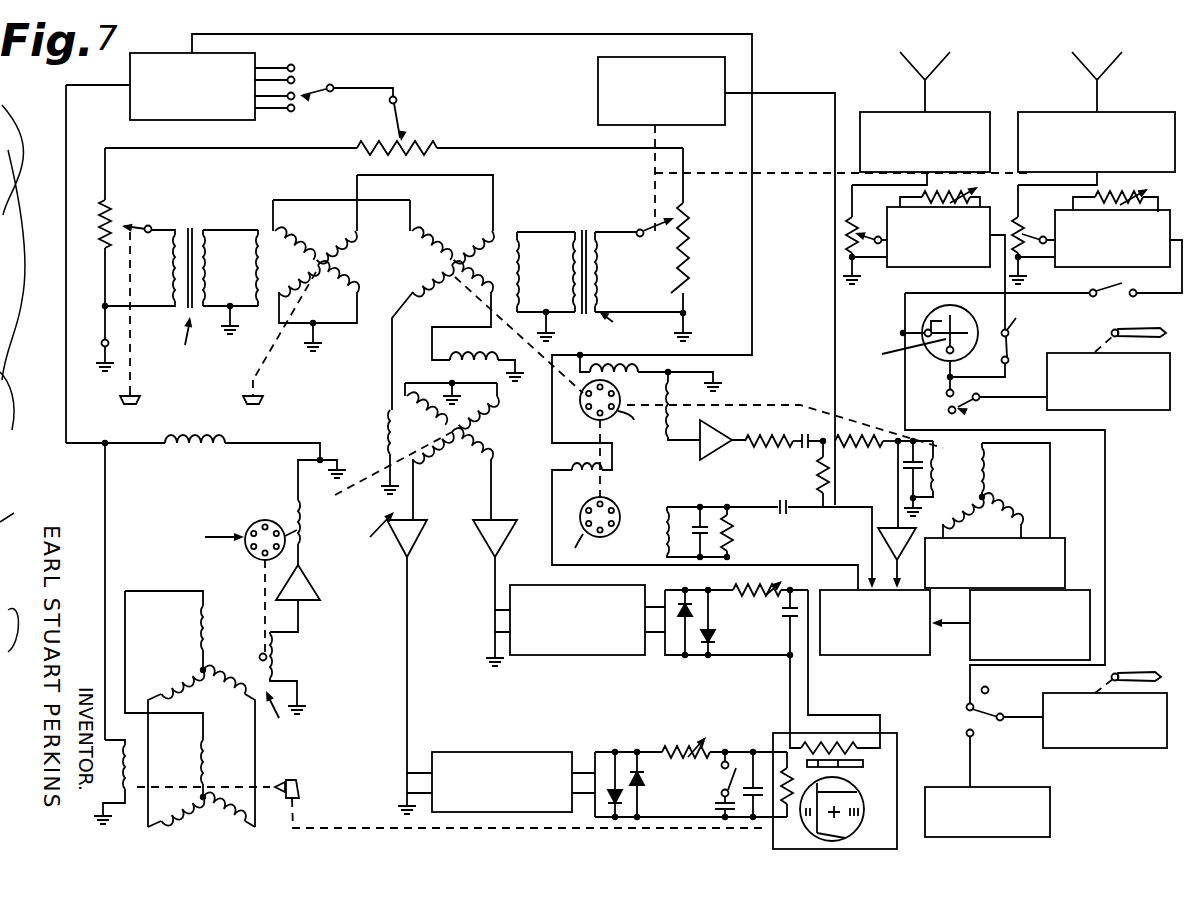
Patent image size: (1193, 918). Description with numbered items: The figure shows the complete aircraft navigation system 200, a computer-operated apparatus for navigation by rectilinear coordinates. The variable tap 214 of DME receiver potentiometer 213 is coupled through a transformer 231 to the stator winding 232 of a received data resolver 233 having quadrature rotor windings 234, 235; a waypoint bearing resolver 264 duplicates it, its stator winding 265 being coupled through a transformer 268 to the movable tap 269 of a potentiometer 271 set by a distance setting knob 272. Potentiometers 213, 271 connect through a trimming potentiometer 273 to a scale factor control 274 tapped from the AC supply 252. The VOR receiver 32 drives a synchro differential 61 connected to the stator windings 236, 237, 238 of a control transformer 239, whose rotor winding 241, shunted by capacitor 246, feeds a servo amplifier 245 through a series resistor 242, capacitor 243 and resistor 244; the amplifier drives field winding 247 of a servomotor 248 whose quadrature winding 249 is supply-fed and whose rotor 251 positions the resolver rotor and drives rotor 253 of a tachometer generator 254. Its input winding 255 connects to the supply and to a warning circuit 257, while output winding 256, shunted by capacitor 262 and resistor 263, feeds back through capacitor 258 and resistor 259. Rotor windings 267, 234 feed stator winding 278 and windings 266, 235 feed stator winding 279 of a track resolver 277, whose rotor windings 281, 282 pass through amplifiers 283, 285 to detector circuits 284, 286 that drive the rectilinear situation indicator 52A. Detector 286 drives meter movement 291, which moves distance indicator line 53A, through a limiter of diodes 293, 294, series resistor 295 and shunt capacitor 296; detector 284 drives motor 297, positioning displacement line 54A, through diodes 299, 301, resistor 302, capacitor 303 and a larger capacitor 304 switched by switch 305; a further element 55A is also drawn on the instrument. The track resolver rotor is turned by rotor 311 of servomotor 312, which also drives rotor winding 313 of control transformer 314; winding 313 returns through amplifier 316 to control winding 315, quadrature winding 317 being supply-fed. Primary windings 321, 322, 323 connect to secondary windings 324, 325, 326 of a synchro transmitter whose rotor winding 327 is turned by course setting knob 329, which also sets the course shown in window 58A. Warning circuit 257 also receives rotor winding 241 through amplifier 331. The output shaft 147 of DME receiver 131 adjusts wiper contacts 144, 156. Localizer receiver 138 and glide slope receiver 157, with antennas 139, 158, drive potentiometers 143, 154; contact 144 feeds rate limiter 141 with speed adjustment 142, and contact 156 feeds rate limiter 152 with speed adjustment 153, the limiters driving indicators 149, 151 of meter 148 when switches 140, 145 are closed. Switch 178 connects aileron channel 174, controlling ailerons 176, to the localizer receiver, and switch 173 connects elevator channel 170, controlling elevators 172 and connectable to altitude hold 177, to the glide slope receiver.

The AC power supply 252 is at (131, 113).
The scale factor control 274 is at (311, 88).
The trimming potentiometer 273 is at (418, 142).
The potentiometer 271 is at (91, 259).
The movable tap 269 is at (141, 223).
The distance setting knob 272 is at (136, 408).
The stator winding 265 is at (181, 282).
The transformer 268 is at (180, 295).
The waypoint bearing resolver 264 is at (266, 224).
The rotor winding 267 is at (345, 247).
The rotor winding 266 is at (342, 290).
The rotor winding 235 is at (428, 242).
The received data resolver 233 is at (498, 238).
The rotor winding 234 is at (418, 302).
The second quadrature stator winding 279 is at (510, 335).
The first stator winding 278 is at (385, 430).
The stator winding 232 is at (517, 284).
The transformer 231 is at (643, 324).
The variable tap 214 is at (645, 242).
The DME receiver potentiometer 213 is at (688, 259).
The DME receiver 131 is at (598, 90).
The navigation system 200 is at (767, 350).
The output shaft 147 is at (786, 178).
The quadrature stator winding 249 is at (610, 370).
The servomotor 248 is at (730, 335).
The first field winding 247 is at (676, 430).
The servo amplifier 245 is at (702, 454).
The rotor 251 is at (611, 411).
The tachometer generator 254 is at (611, 492).
The rotor 253 is at (596, 532).
The input stator winding 255 is at (566, 470).
The output stator winding 256 is at (660, 525).
The capacitor 262 is at (707, 498).
The resistor 263 is at (734, 540).
The series capacitor 258 is at (770, 511).
The series resistor 244 is at (772, 430).
The capacitor 243 is at (778, 450).
The series resistor 259 is at (818, 478).
The series resistor 242 is at (850, 446).
The capacitor 246 is at (910, 472).
The amplifier 331 is at (888, 515).
The rotor winding 241 is at (938, 476).
The control transformer 239 is at (968, 448).
The stator winding 236 is at (990, 470).
The stator winding 237 is at (1013, 504).
The stator winding 238 is at (969, 518).
The synchro differential 61 is at (1059, 550).
The warning circuit 257 is at (863, 658).
The VOR receiver 32 is at (976, 652).
The localizer receiver 138 is at (945, 118).
The antenna 139 is at (941, 68).
The glide slope receiver 157 is at (1148, 120).
The antenna 158 is at (1112, 68).
The potentiometer 143 is at (846, 236).
The speed adjustment 142 is at (955, 192).
The rate limiter 141 is at (930, 270).
The potentiometer 154 is at (1022, 215).
The speed adjustment 153 is at (1126, 194).
The rate limiter 152 is at (1108, 270).
The wiper contact 156 is at (1030, 258).
The wiper contact 144 is at (991, 492).
The switch 145 is at (1104, 305).
The meter 148 is at (956, 322).
The indicator 151 is at (900, 328).
The meter movement 149 is at (898, 352).
The switch 140 is at (1003, 341).
The switch 178 is at (966, 410).
The aileron channel 174 is at (1139, 411).
The ailerons 176 is at (1131, 331).
The switch 173 is at (1005, 729).
The elevator channel 170 is at (1130, 749).
The elevators 172 is at (1127, 671).
The altitude hold 177 is at (1030, 838).
The window 58A is at (867, 763).
The meter movement 291 is at (846, 742).
The rectilinear situation indicator 52A is at (870, 762).
The distance indicator line 53A is at (896, 772).
The linear displacement indicator line 54A is at (850, 832).
The indicator needle 55A is at (840, 818).
The detector circuit 286 is at (560, 656).
The diode 293 is at (663, 592).
The diode 294 is at (711, 640).
The series resistor 295 is at (782, 582).
The shunt capacitor 296 is at (784, 624).
The rotor winding 281 is at (482, 415).
The rotor winding 282 is at (474, 457).
The amplifier 283 is at (424, 548).
The amplifier 285 is at (502, 532).
The track resolver 277 is at (393, 493).
The detector circuit 284 is at (495, 748).
The diode 299 is at (625, 801).
The diode 301 is at (645, 778).
The series resistor 302 is at (691, 738).
The switch 305 is at (712, 774).
The second capacitor 304 is at (718, 813).
The shunt capacitor 303 is at (762, 738).
The motor 297 is at (786, 806).
The quadrature input winding 317 is at (184, 440).
The control winding 315 is at (303, 524).
The servomotor 312 is at (221, 540).
The rotor 311 is at (256, 558).
The amplifier 316 is at (308, 585).
The rotor winding 313 is at (283, 651).
The control transformer 314 is at (289, 715).
The primary winding 321 is at (196, 629).
The primary winding 322 is at (176, 680).
The primary winding 323 is at (234, 680).
The secondary winding 324 is at (209, 768).
The secondary winding 325 is at (177, 822).
The secondary winding 326 is at (231, 819).
The primary winding 327 is at (135, 770).
The course setting knob 329 is at (298, 781).